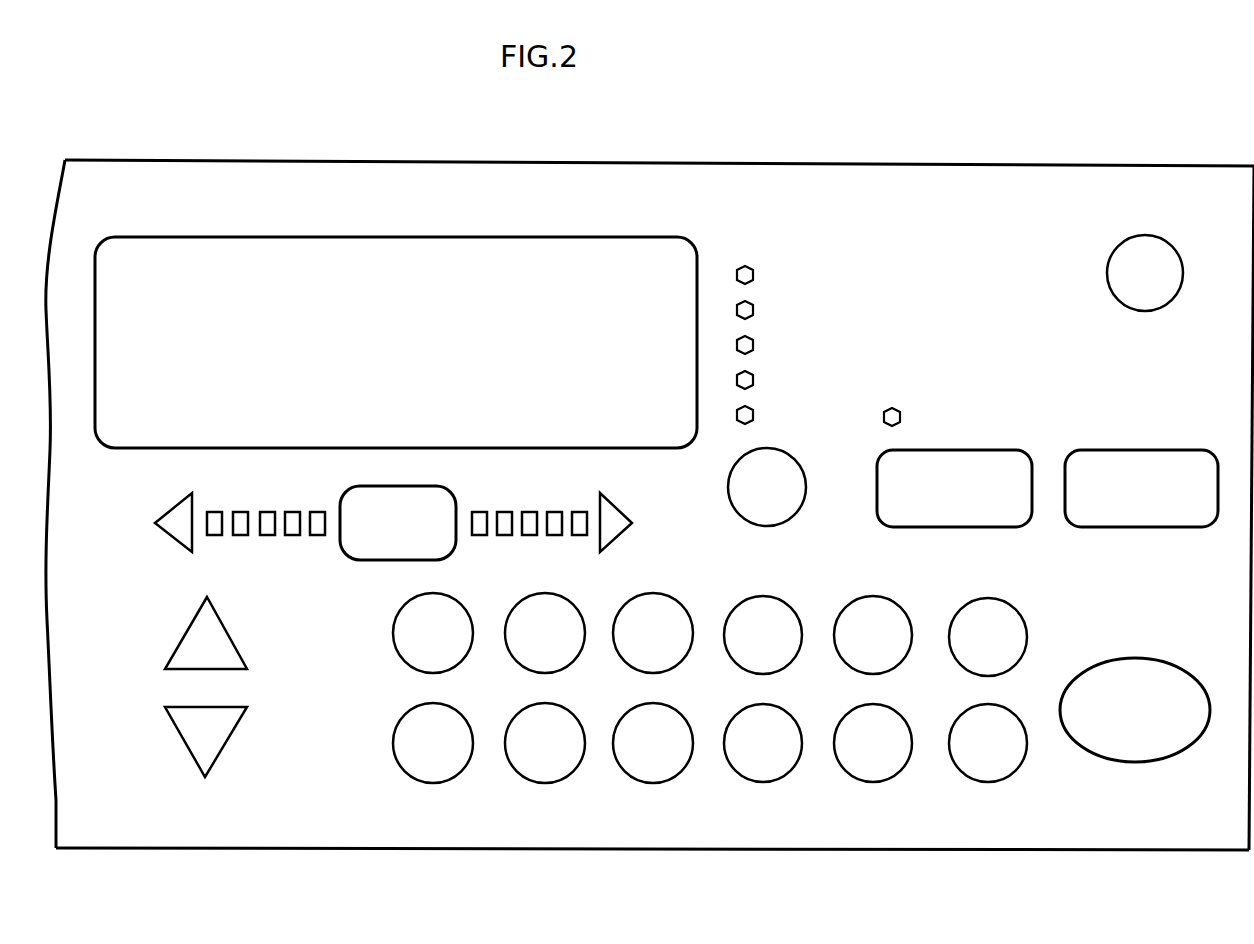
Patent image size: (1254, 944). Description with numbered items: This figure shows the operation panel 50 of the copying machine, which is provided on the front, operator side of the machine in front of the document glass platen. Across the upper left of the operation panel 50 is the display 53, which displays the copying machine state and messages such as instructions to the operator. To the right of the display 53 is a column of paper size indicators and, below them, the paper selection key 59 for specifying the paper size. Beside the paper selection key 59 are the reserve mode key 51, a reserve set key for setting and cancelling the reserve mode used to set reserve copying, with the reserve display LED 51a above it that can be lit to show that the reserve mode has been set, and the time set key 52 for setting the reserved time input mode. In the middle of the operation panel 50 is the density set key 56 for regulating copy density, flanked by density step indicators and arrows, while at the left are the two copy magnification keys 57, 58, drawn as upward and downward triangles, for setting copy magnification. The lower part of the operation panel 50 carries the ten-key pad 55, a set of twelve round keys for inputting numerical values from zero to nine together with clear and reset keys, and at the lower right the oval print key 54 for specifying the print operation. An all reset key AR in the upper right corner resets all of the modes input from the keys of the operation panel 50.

The operation panel 50 is at (1170, 160).
The reserve mode key 51 is at (985, 450).
The reserve display LED 51a is at (898, 406).
The time set key 52 is at (1150, 450).
The display 53 is at (628, 237).
The print key 54 is at (1115, 762).
The ten-key pad 55 is at (612, 777).
The density set key 56 is at (372, 560).
The copy magnification key 57 is at (184, 637).
The copy magnification key 58 is at (184, 745).
The paper selection key 59 is at (775, 525).